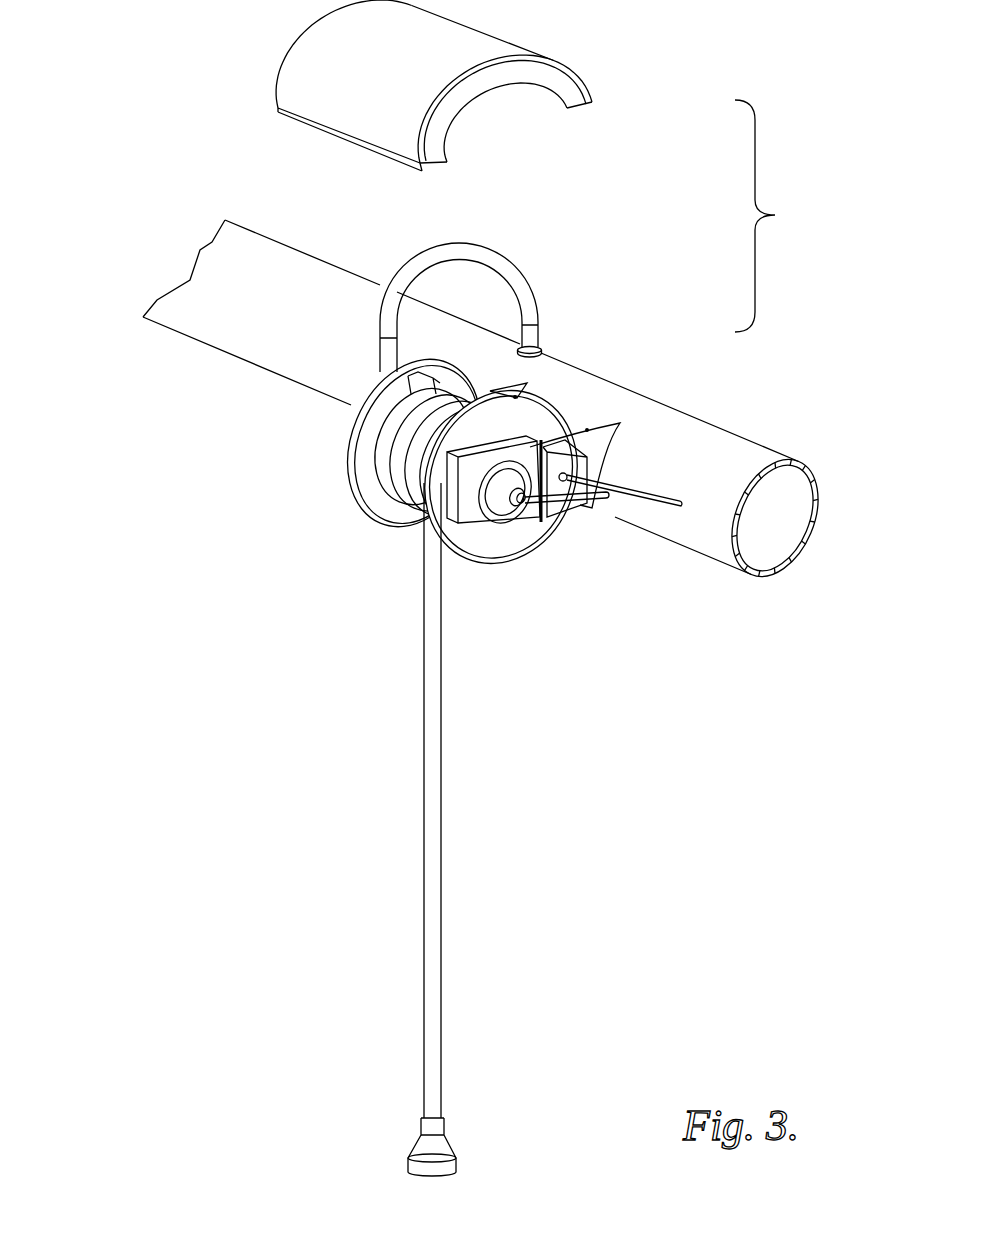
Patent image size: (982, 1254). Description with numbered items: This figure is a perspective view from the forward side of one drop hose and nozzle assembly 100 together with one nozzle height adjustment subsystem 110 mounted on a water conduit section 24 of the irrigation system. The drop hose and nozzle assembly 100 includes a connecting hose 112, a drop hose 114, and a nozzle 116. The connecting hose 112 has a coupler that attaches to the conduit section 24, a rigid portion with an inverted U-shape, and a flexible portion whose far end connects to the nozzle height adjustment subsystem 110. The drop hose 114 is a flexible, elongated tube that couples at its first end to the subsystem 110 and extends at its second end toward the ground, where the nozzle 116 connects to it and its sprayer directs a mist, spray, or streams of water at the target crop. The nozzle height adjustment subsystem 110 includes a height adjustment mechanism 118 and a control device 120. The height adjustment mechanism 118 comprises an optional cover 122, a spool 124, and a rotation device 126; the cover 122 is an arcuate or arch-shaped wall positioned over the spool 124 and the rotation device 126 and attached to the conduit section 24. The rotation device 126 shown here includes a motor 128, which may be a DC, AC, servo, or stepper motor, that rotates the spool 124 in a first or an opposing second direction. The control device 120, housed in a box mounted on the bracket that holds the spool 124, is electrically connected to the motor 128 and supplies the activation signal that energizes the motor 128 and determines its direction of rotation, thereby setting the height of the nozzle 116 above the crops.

The conduit section 24 is at (221, 258).
The drop hose and nozzle assembly 100 is at (200, 82).
The nozzle height adjustment subsystem 110 is at (497, 588).
The connecting hose 112 is at (514, 238).
The drop hose 114 is at (430, 774).
The nozzle 116 is at (422, 1150).
The height adjustment mechanism 118 is at (345, 517).
The control device 120 is at (589, 508).
The cover 122 is at (485, 40).
The spool 124 is at (478, 570).
The rotation device 126 is at (574, 554).
The motor 128 is at (521, 530).